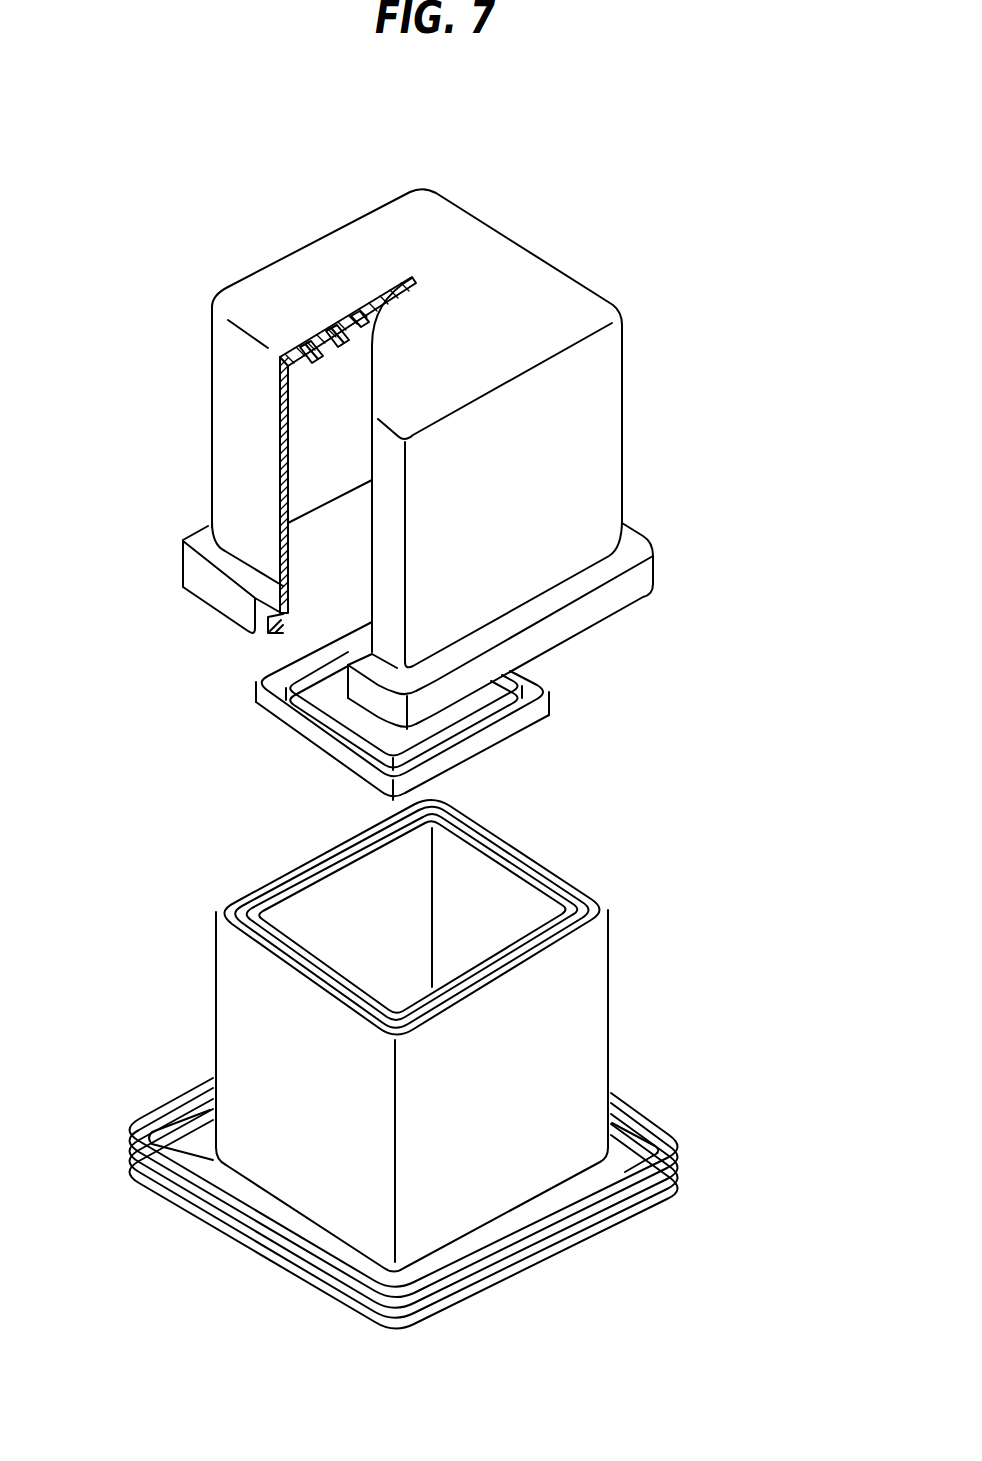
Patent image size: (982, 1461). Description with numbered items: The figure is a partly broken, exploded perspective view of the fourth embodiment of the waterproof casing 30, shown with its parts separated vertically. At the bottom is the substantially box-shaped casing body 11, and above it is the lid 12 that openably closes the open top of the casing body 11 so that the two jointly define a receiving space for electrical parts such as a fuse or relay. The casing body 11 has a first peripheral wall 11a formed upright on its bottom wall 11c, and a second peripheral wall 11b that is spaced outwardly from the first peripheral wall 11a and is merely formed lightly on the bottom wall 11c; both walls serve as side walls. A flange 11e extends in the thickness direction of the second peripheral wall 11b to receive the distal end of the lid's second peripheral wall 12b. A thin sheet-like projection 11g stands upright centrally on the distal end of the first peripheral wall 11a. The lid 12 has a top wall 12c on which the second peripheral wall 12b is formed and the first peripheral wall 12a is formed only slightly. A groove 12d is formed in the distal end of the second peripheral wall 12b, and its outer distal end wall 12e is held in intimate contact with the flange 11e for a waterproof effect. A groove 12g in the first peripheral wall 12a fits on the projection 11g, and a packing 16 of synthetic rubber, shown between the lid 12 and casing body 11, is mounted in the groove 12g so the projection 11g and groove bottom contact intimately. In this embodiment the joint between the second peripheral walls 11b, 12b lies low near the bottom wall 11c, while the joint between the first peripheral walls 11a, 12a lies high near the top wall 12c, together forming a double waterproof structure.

The waterproof casing 30 is at (700, 558).
The lid 12 is at (540, 242).
The first peripheral wall 12a is at (348, 307).
The second peripheral wall 12b is at (280, 476).
The top wall 12c is at (367, 298).
The groove 12d is at (272, 614).
The outer distal end wall 12e is at (210, 592).
The groove 12g is at (330, 356).
The packing 16 is at (545, 690).
The casing body 11 is at (626, 935).
The first peripheral wall 11a is at (592, 992).
The second peripheral wall 11b is at (642, 1105).
The bottom wall 11c is at (192, 1138).
The flange 11e is at (683, 1162).
The projection 11g is at (577, 890).